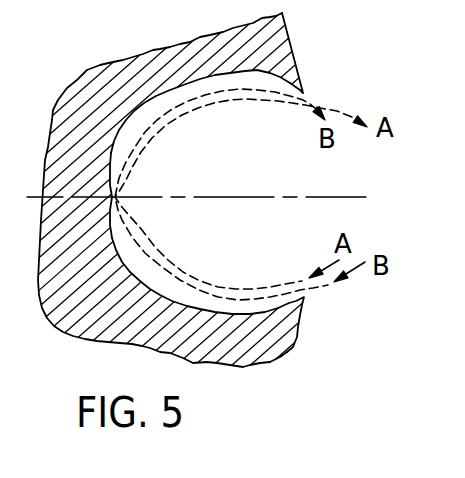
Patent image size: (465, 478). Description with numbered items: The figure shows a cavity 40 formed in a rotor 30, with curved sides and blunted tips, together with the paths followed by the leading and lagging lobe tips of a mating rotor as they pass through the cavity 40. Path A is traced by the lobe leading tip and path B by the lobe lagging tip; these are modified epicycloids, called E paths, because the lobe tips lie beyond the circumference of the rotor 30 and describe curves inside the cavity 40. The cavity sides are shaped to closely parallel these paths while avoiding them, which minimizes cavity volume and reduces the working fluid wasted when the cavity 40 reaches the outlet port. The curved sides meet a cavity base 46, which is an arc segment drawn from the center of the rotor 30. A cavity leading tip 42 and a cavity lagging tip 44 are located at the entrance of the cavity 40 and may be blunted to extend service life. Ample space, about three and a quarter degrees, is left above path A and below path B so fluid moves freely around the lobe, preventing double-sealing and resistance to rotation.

The rotor 30 is at (272, 53).
The cavity 40 is at (140, 120).
The cavity leading tip 42 is at (303, 97).
The cavity lagging tip 44 is at (304, 297).
The cavity base 46 is at (108, 170).